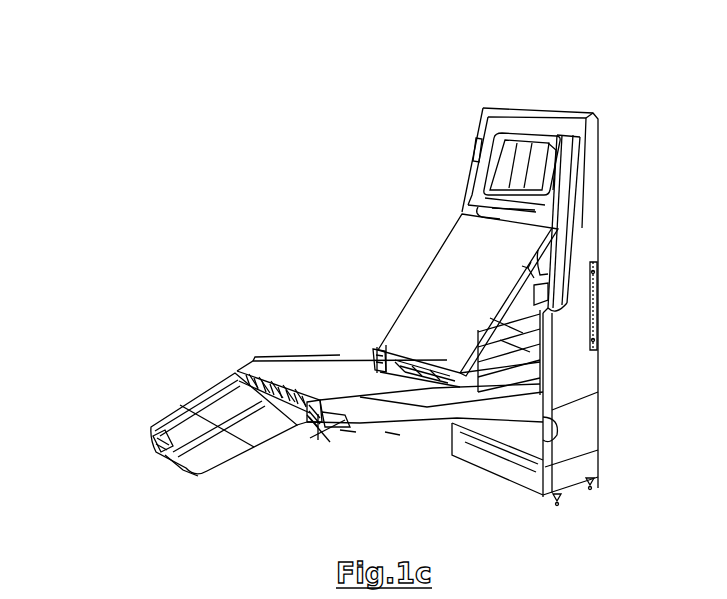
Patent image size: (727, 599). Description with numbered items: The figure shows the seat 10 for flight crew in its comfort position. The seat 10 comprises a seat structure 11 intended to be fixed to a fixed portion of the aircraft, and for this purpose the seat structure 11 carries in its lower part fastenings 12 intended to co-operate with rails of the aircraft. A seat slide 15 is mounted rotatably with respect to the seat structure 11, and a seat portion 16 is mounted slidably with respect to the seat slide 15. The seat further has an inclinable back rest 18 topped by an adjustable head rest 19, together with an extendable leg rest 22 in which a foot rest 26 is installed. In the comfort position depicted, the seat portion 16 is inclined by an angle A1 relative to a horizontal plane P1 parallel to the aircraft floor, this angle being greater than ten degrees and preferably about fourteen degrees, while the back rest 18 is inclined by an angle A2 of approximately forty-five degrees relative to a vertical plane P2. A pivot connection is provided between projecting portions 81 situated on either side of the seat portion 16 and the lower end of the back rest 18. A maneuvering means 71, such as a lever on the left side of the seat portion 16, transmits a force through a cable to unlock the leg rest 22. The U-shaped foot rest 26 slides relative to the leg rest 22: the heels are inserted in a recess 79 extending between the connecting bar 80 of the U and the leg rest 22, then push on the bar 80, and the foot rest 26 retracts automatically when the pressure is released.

The seat 10 is at (313, 130).
The seat structure 11 is at (583, 227).
The fastenings 12 is at (562, 496).
The seat slide 15 is at (457, 413).
The seat portion 16 is at (328, 373).
The back rest 18 is at (450, 272).
The head rest 19 is at (527, 160).
The leg rest 22 is at (213, 393).
The foot rest 26 is at (155, 450).
The maneuvering means 71 is at (340, 428).
The recess 79 is at (160, 438).
The connecting bar 80 is at (172, 455).
The projecting portions 81 is at (376, 350).
The angle A1 is at (392, 437).
The angle A2 is at (540, 303).
The horizontal plane P1 is at (348, 450).
The vertical plane P2 is at (552, 362).